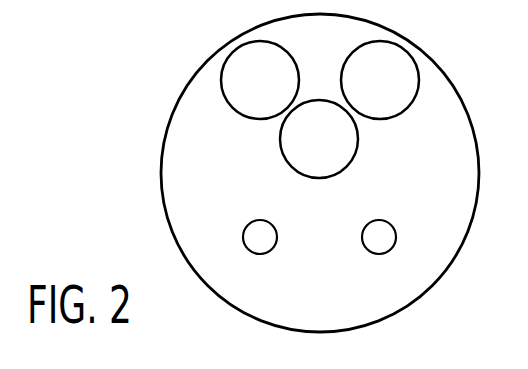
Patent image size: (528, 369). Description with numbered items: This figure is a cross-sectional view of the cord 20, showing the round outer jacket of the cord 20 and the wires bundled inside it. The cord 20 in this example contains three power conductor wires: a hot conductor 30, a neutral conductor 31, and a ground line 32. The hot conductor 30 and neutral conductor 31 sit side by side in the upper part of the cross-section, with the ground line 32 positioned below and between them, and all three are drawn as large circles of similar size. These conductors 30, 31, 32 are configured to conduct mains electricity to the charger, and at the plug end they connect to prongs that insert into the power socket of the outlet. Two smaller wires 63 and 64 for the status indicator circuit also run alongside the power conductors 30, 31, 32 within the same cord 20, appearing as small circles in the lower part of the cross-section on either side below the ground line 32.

The cord 20 is at (433, 59).
The hot conductor 30 is at (233, 112).
The neutral conductor 31 is at (405, 112).
The ground line 32 is at (318, 179).
The wire for the status indicator circuit 63 is at (243, 244).
The wire for the status indicator circuit 64 is at (397, 244).